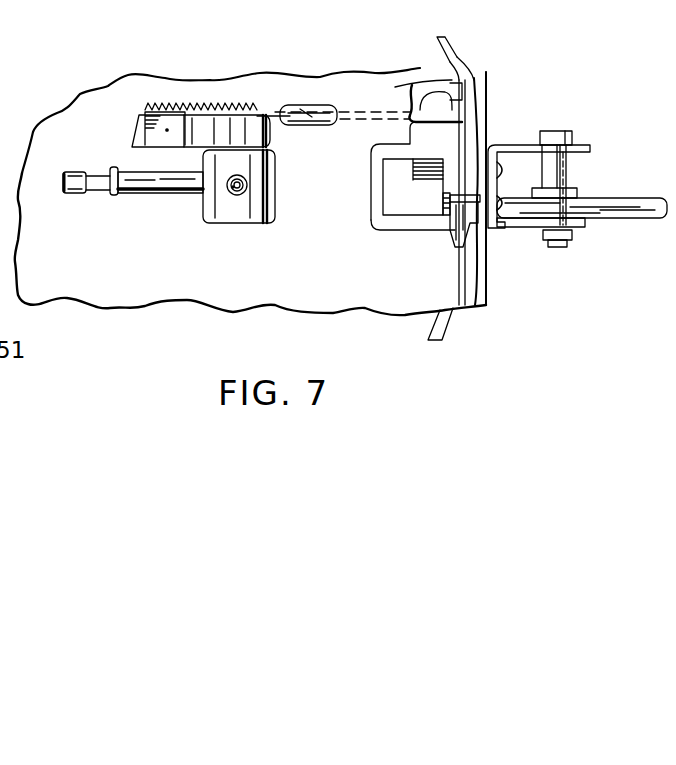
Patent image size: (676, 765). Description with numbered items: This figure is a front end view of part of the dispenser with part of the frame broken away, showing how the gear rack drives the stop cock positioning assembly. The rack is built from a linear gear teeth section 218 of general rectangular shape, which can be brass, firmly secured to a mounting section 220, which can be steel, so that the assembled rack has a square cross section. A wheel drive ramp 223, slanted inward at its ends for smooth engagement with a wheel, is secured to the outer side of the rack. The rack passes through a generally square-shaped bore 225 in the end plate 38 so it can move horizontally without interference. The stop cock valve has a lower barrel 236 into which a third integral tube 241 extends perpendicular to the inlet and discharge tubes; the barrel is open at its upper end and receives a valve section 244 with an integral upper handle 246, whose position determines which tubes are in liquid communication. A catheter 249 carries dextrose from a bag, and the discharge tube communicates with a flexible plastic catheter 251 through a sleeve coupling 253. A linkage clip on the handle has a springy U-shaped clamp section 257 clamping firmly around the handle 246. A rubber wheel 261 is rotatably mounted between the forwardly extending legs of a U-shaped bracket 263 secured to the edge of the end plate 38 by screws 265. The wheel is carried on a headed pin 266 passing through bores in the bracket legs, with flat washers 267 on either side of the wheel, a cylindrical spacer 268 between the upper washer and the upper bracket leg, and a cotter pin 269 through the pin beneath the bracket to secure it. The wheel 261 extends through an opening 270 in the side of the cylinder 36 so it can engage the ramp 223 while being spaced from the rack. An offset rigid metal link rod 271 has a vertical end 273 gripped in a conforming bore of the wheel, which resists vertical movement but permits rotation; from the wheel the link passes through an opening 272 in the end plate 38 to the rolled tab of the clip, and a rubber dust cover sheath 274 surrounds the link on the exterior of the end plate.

The cylinder 36 is at (450, 327).
The end plate 38 is at (350, 297).
The linear gear teeth section 218 is at (420, 163).
The mounting section 220 is at (410, 203).
The wheel drive ramp 223 is at (448, 245).
The square-shaped bore 225 is at (373, 200).
The lower barrel 236 is at (247, 167).
The third integral tube 241 is at (137, 177).
The valve section 244 is at (240, 133).
The upper handle 246 is at (140, 135).
The catheter 249 is at (63, 180).
The flexible plastic catheter 251 is at (233, 187).
The sleeve coupling 253 is at (237, 187).
The clamp section 257 is at (167, 130).
The wheel 261 is at (612, 213).
The U-shaped bracket 263 is at (590, 141).
The screws 265 is at (500, 165).
The headed pin 266 is at (552, 140).
The flat washers 267 is at (567, 190).
The cylindrical spacer 268 is at (550, 178).
The cotter pin 269 is at (567, 247).
The opening 270 is at (475, 102).
The link rod 271 is at (413, 77).
The opening 272 is at (317, 117).
The vertical end 273 is at (403, 133).
The rubber dust cover sheath 274 is at (200, 110).